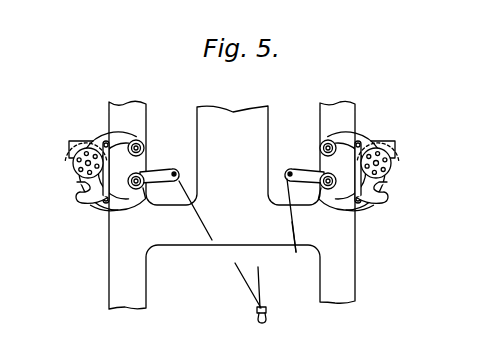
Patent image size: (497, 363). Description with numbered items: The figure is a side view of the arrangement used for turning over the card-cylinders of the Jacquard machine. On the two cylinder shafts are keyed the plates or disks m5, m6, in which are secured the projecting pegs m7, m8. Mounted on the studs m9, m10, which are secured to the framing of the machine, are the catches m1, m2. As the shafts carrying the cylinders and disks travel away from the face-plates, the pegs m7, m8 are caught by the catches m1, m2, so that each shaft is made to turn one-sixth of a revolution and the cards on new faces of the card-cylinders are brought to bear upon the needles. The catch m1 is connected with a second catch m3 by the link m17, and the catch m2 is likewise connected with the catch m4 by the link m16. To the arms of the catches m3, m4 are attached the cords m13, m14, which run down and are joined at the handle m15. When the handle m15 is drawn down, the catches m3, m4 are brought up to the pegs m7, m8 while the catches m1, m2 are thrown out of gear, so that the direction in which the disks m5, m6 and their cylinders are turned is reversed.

The catch m1 is at (119, 137).
The catch m2 is at (357, 134).
The catch m3 is at (96, 204).
The catch m4 is at (374, 198).
The plate or disk m5 is at (77, 175).
The plate or disk m6 is at (391, 165).
The projecting pegs m7 is at (73, 186).
The projecting pegs m8 is at (388, 181).
The stud m9 is at (145, 149).
The stud m10 is at (320, 146).
The cord m13 is at (160, 177).
The cord m14 is at (294, 227).
The handle m15 is at (268, 320).
The link m16 is at (109, 167).
The link m17 is at (355, 167).